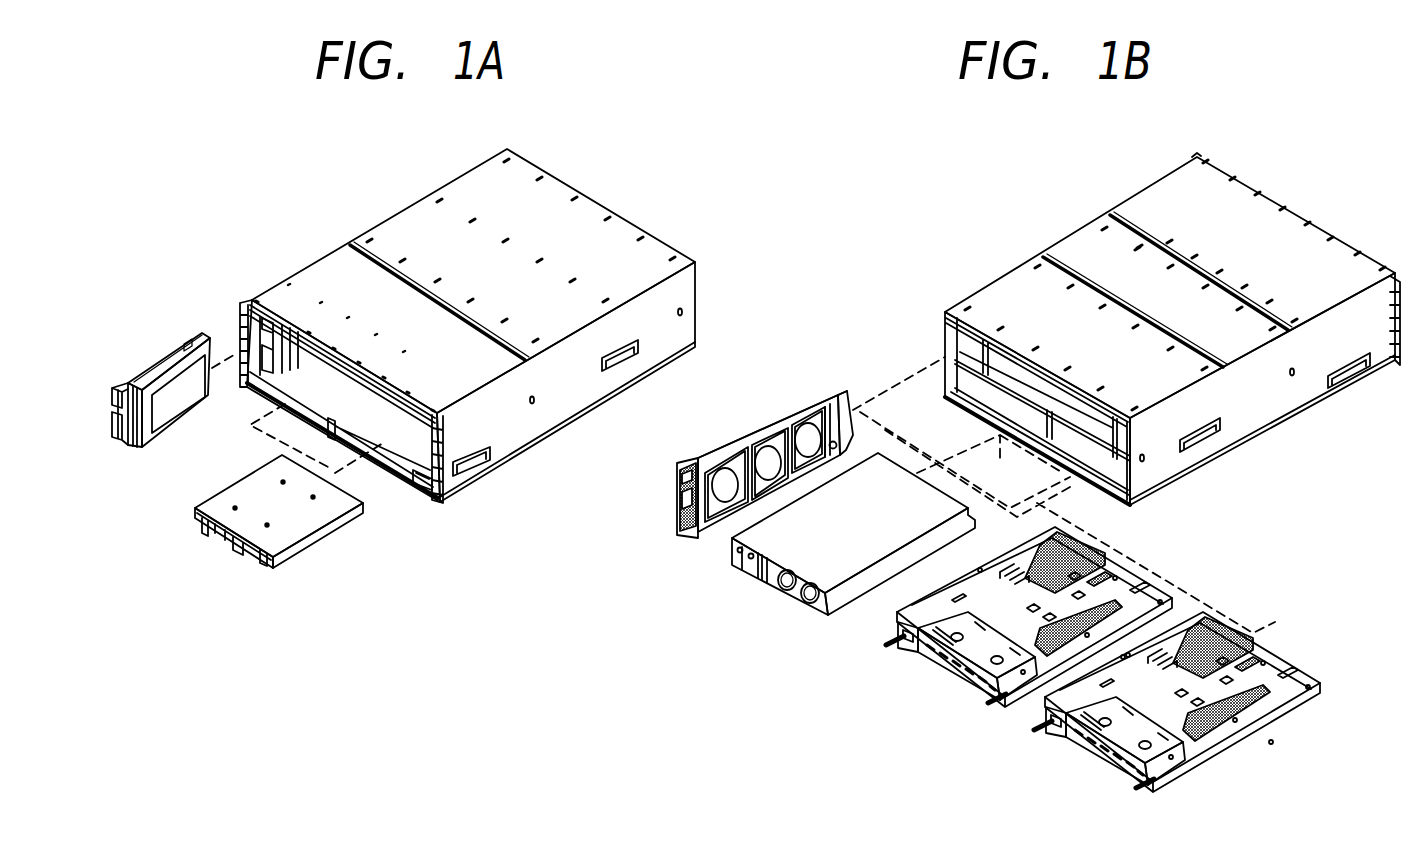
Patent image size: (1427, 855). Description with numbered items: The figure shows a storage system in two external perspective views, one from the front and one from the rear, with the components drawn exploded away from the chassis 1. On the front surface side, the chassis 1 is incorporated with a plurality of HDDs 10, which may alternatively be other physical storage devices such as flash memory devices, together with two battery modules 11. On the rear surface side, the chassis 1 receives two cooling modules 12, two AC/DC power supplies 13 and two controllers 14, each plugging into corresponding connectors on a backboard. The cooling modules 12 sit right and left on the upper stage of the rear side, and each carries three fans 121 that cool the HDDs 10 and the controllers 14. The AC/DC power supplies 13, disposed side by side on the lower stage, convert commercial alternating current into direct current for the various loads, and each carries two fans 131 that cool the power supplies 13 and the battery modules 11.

In FIG. 1A, the chassis 1 is at (550, 181).
In FIG. 1B, the chassis 1 is at (1298, 212).
In FIG. 1A, the HDD 10 is at (168, 352).
In FIG. 1A, the battery module 11 is at (287, 528).
In FIG. 1B, the cooling module 12 is at (763, 391).
In FIG. 1B, the fan 121 is at (724, 483).
In FIG. 1B, the AC/DC power supply 13 is at (790, 551).
In FIG. 1B, the fan 131 is at (768, 609).
In FIG. 1B, the controller 14 is at (918, 653).